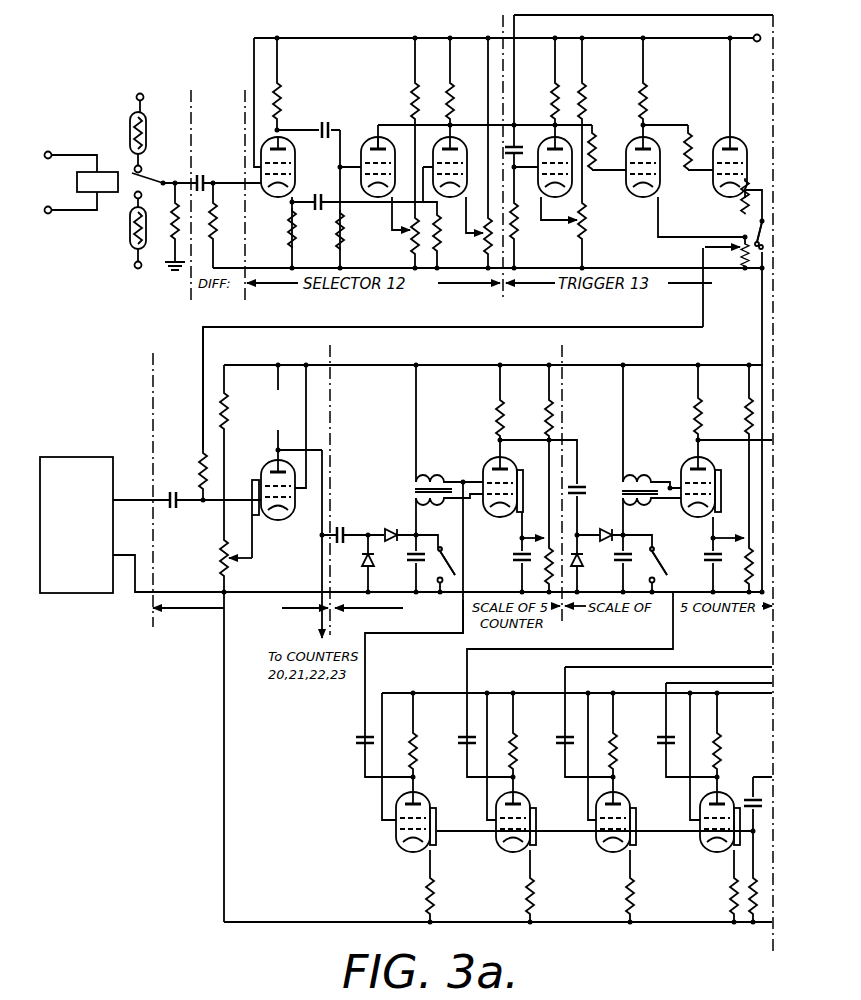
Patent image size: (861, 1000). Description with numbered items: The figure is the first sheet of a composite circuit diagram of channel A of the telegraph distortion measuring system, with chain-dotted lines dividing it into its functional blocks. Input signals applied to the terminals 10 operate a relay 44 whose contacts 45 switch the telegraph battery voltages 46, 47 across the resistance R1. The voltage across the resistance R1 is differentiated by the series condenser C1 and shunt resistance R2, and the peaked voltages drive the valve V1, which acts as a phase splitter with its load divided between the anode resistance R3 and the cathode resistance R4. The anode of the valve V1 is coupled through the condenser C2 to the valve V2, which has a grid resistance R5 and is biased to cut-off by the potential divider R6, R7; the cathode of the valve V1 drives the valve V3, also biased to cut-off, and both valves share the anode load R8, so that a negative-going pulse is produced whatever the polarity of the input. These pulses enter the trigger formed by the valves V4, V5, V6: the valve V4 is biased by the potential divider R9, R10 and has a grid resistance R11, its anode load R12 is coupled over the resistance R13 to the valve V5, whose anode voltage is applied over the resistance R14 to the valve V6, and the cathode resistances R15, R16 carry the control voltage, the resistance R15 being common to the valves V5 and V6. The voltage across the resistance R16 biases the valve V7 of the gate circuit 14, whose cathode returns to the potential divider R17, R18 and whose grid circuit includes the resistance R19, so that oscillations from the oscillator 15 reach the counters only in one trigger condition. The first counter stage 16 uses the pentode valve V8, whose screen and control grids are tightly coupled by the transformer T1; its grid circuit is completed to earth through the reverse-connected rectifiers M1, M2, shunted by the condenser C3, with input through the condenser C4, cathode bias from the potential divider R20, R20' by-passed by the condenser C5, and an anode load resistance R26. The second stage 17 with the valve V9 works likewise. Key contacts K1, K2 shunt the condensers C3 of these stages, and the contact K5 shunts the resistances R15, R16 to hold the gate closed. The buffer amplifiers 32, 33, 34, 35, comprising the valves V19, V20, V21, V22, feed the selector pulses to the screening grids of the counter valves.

The terminals 10 is at (50, 151).
The relay 44 is at (103, 172).
The contacts 45 is at (141, 165).
The telegraph battery voltage 46 is at (142, 94).
The telegraph battery voltage 47 is at (134, 266).
The resistance R1 is at (172, 236).
The series condenser C1 is at (204, 173).
The shunt resistance R2 is at (218, 228).
The cathode resistance R4 is at (288, 226).
The anode resistance R3 is at (282, 92).
The valve V1 is at (287, 136).
The condenser C2 is at (329, 121).
The valve V2 is at (372, 137).
The potential divider resistance R6 is at (412, 87).
The anode load R8 is at (445, 88).
The valve V3 is at (456, 137).
The grid resistance R5 is at (337, 236).
The potential divider resistance R7 is at (410, 234).
The anode load R12 is at (552, 98).
The potential divider resistance R9 is at (586, 98).
The valve V4 is at (547, 137).
The valve V5 is at (635, 160).
The resistance R14 is at (690, 128).
The valve V6 is at (723, 160).
The resistance R13 is at (600, 160).
The potential divider resistance R10 is at (588, 232).
The grid resistance R11 is at (518, 220).
The cathode resistance R15 is at (742, 205).
The cathode resistance R16 is at (742, 238).
The key contact K5 is at (757, 270).
The gate circuit 14 is at (253, 622).
The oscillator 15 is at (72, 547).
The grid resistance R19 is at (200, 480).
The potential divider resistance R17 is at (228, 420).
The valve V7 is at (268, 472).
The potential divider resistance R18 is at (230, 572).
The input condenser C4 is at (343, 527).
The rectifier M1 is at (390, 532).
The rectifier M2 is at (363, 563).
The condenser C3 is at (408, 562).
The transformer T1 is at (413, 490).
The pentode valve V8 is at (490, 464).
The load resistance R26 is at (496, 413).
The potential divider resistance R20 is at (515, 555).
The by-pass condenser C5 is at (510, 557).
The key contact K1 is at (436, 566).
The first counter stage 16 is at (460, 627).
The potential divider resistance R20' is at (576, 413).
The key contact K2 is at (664, 548).
The valve V9 is at (690, 463).
The second counter stage 17 is at (655, 627).
The valve V19 is at (426, 792).
The valve V20 is at (524, 793).
The valve V21 is at (626, 797).
The valve V22 is at (727, 792).
The buffer amplifier 32 is at (411, 940).
The buffer amplifier 33 is at (506, 940).
The buffer amplifier 34 is at (606, 940).
The buffer amplifier 35 is at (709, 940).